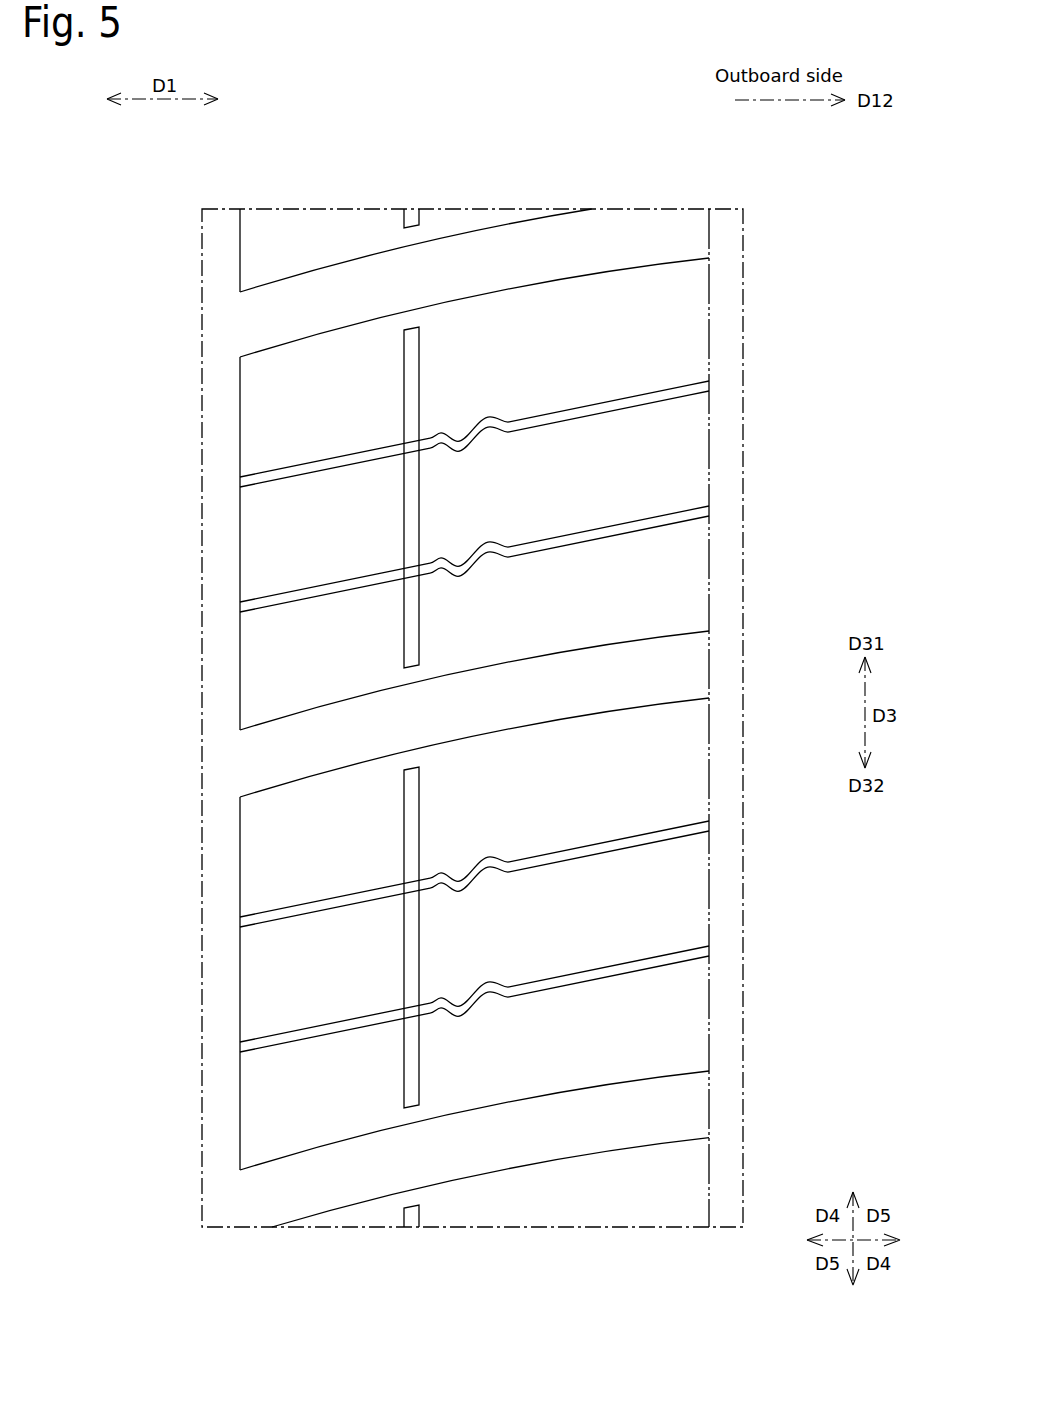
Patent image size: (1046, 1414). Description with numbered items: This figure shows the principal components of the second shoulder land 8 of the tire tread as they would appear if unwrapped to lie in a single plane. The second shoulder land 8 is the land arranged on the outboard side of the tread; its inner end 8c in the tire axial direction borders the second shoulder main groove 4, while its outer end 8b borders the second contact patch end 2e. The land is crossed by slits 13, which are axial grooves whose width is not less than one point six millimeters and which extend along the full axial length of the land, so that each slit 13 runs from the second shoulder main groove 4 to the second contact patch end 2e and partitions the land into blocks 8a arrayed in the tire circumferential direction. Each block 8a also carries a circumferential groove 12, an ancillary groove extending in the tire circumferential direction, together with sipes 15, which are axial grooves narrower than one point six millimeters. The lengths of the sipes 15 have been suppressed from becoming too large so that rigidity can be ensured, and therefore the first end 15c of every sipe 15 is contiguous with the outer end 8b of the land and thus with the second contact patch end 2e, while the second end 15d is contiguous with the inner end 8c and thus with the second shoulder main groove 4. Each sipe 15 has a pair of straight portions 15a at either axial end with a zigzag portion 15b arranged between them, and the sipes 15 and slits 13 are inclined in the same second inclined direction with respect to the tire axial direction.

The second shoulder main groove 4 is at (219, 238).
The second contact patch end 2e is at (710, 235).
The second shoulder land 8 is at (459, 222).
The block 8a is at (257, 667).
The outer end of second shoulder land 8b is at (710, 300).
The inner end of second shoulder land 8c is at (240, 265).
The circumferential groove 12 is at (420, 357).
The slit 13 is at (258, 325).
The second shoulder sipe 15 is at (473, 678).
The straight portion 15a is at (320, 462).
The zigzag portion 15b is at (483, 416).
The first end of sipe 15c is at (710, 386).
The second end of sipe 15d is at (240, 480).